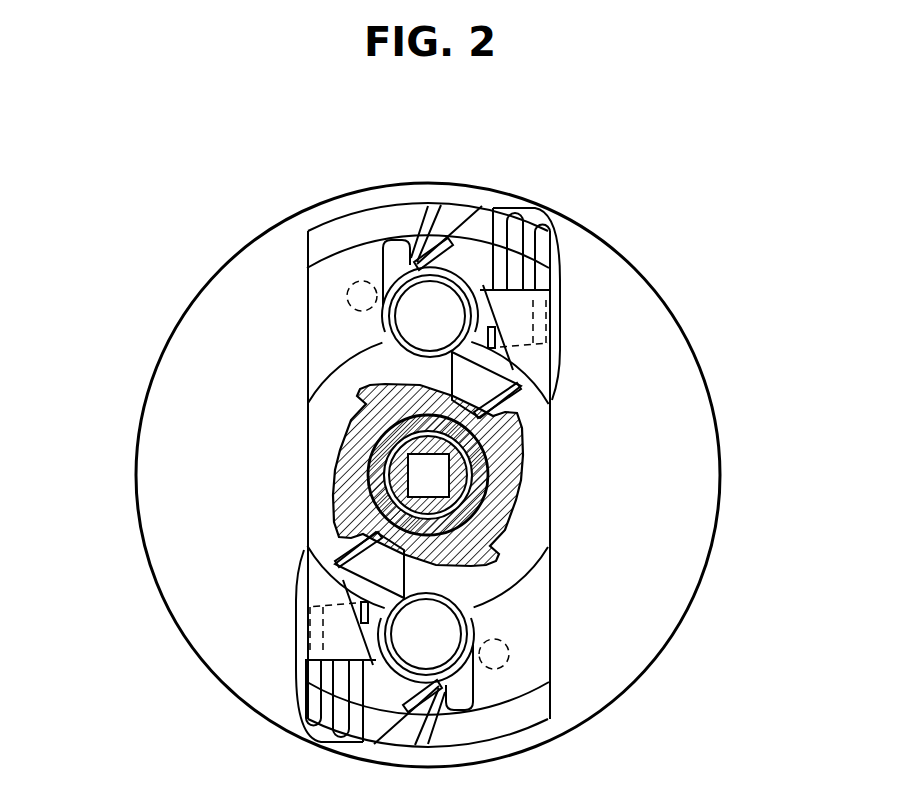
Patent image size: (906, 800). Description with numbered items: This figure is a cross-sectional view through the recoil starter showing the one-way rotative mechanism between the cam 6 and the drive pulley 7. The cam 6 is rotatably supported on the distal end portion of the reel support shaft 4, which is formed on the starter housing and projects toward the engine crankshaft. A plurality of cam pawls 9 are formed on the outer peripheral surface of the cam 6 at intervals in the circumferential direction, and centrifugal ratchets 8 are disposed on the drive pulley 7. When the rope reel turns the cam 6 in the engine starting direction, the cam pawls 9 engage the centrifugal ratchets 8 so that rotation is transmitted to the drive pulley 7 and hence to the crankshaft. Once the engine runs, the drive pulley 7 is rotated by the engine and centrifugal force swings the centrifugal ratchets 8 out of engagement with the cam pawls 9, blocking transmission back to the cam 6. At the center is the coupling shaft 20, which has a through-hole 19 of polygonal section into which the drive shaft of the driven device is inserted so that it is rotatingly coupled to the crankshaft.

The reel support shaft 4 is at (307, 402).
The cam 6 is at (355, 468).
The drive pulley 7 is at (618, 247).
The centrifugal ratchets 8 is at (550, 412).
The cam pawls 9 is at (364, 396).
The through-hole 19 is at (432, 473).
The coupling shaft 20 is at (478, 481).